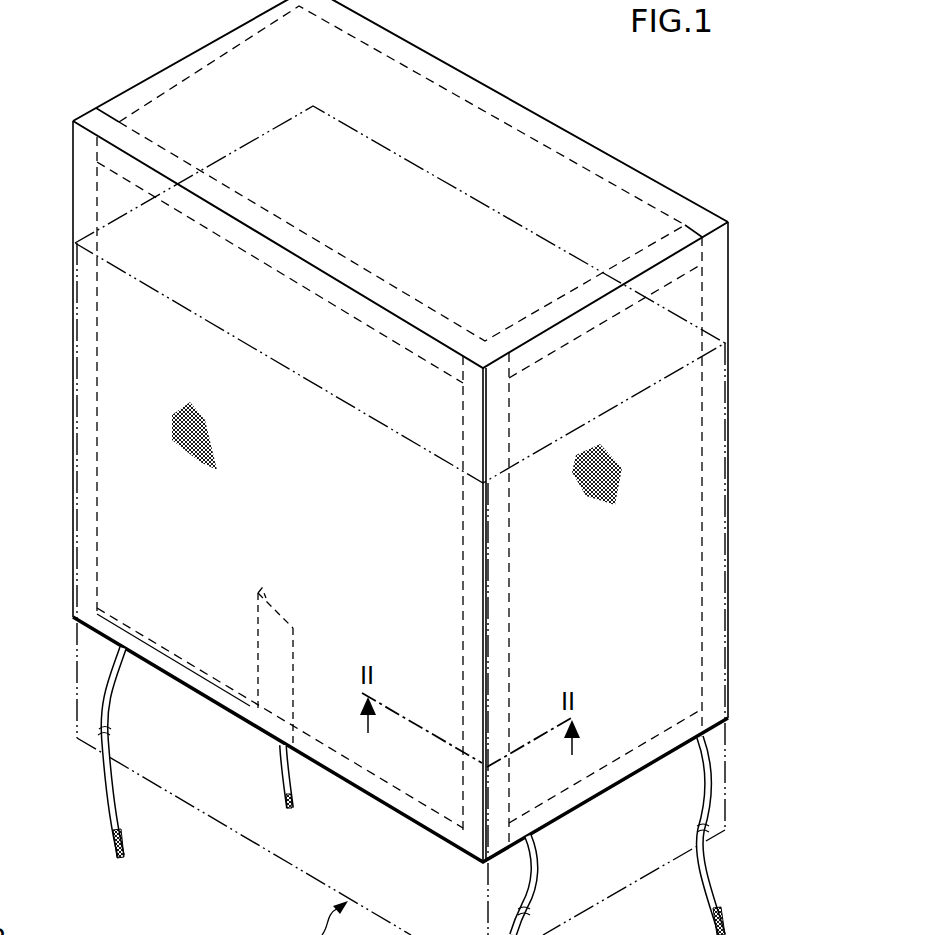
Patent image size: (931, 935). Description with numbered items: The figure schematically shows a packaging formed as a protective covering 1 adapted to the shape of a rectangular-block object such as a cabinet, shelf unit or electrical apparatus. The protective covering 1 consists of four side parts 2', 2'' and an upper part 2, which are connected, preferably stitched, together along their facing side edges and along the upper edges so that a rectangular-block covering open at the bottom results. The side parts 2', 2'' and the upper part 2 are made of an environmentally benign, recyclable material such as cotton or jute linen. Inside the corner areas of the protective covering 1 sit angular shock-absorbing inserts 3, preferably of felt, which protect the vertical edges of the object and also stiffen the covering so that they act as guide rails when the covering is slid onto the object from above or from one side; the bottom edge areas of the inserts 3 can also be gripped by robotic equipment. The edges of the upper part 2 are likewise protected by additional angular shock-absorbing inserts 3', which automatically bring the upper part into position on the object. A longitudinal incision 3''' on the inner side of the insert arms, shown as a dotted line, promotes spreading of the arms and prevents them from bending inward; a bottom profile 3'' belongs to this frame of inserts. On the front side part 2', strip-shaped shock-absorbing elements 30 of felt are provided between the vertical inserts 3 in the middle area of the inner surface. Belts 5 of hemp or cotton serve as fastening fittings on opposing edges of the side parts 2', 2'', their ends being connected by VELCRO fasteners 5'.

The protective covering 1 is at (552, 96).
The upper part 2 is at (400, 184).
The side part 2' is at (70, 490).
The side part 2'' is at (722, 586).
The shock-absorbing insert 3 is at (399, 491).
The additional angular shock-absorbing insert 3' is at (399, 201).
The bottom frame profile 3'' is at (399, 771).
The longitudinal incision 3''' is at (519, 607).
The strip-shaped shock-absorbing element 30 is at (298, 655).
The belt 5 is at (426, 791).
The VELCRO fastener 5' is at (415, 864).